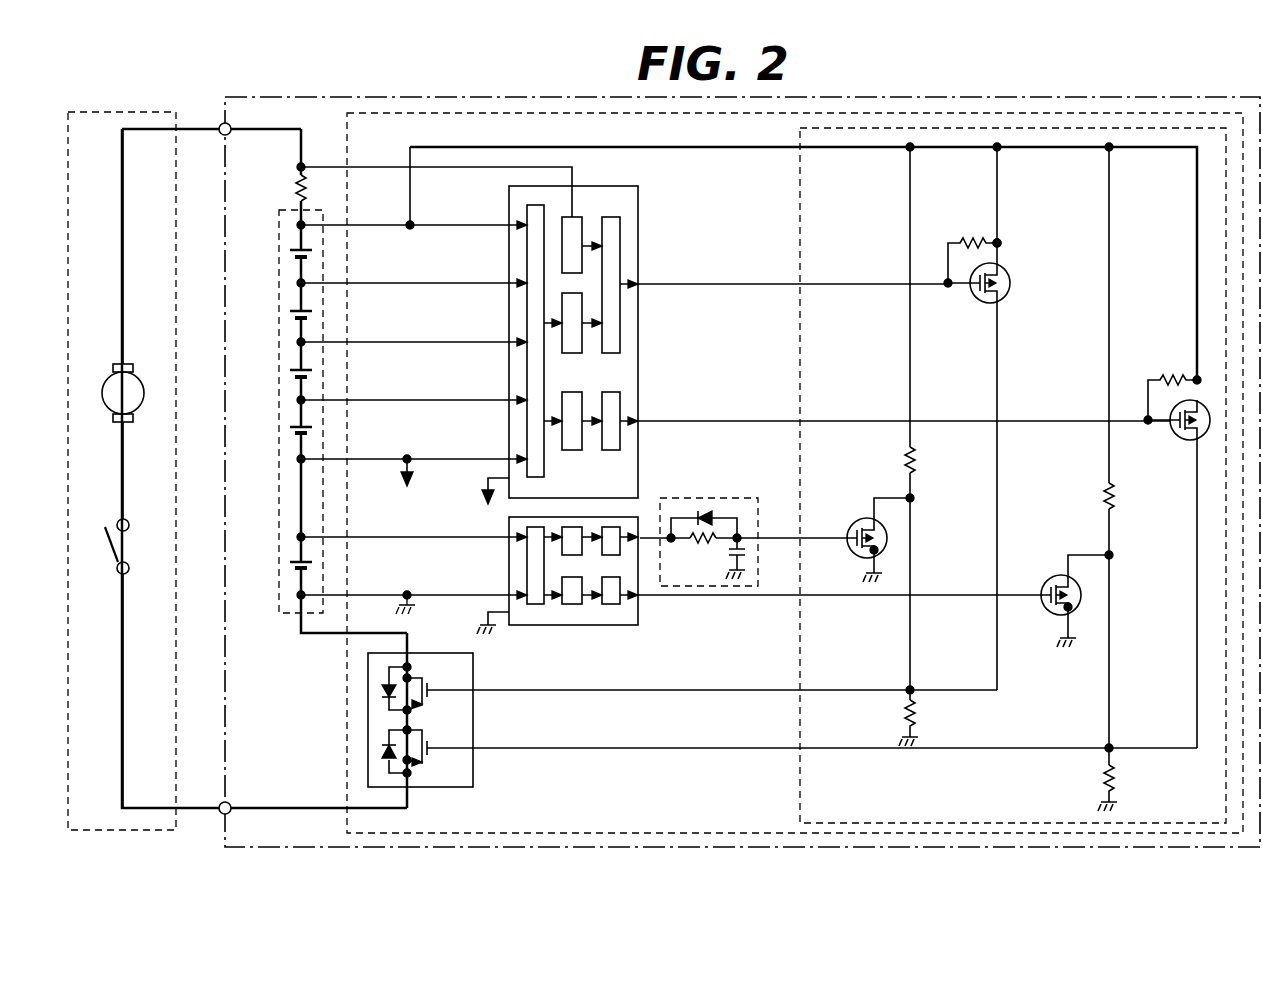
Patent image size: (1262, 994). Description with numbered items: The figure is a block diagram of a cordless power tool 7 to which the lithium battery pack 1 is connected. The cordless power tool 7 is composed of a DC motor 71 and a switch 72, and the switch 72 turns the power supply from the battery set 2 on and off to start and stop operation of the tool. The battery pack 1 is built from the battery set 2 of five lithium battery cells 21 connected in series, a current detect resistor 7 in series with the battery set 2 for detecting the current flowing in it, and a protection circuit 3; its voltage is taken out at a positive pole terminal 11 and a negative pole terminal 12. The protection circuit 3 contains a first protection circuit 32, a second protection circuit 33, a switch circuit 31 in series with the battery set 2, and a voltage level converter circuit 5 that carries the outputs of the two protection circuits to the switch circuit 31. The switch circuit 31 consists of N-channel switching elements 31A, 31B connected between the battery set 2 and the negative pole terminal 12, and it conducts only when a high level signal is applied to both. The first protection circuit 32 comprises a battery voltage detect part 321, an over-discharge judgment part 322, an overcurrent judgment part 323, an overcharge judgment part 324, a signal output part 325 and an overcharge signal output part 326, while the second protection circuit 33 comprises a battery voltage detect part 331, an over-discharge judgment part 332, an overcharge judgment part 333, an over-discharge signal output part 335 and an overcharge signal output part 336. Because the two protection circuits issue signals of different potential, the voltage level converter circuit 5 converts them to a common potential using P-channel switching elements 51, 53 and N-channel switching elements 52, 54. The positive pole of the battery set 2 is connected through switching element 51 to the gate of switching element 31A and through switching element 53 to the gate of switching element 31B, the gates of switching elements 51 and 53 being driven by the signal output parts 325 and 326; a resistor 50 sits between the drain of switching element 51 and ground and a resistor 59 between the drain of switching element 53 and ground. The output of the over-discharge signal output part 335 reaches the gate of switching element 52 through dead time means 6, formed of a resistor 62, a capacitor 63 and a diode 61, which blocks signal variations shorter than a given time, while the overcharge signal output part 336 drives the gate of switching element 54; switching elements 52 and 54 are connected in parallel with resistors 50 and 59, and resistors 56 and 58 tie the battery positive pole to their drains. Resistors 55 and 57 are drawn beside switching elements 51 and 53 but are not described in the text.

The lithium battery pack 1 is at (225, 246).
The battery set 2 is at (279, 233).
The protection circuit 3 is at (347, 129).
The voltage level converter circuit 5 is at (800, 231).
The dead time means 6 is at (746, 498).
The cordless power tool 7 is at (105, 112).
The positive pole terminal 11 is at (221, 122).
The negative pole terminal 12 is at (230, 804).
The lithium battery cell 21 is at (279, 572).
The switch circuit 31 is at (473, 768).
The switching element 31A is at (427, 681).
The switching element 31B is at (427, 756).
The first protection circuit 32 is at (638, 194).
The battery voltage detect part 321 is at (526, 214).
The over-discharge judgment part 322 is at (570, 353).
The overcurrent judgment part 323 is at (576, 212).
The overcharge judgment part 324 is at (572, 450).
The signal output part 325 is at (621, 232).
The overcharge signal output part 326 is at (620, 390).
The second protection circuit 33 is at (509, 570).
The battery voltage detect part 331 is at (534, 604).
The over-discharge judgment part 332 is at (588, 529).
The overcharge judgment part 333 is at (576, 604).
The over-discharge signal output part 335 is at (620, 556).
The overcharge signal output part 336 is at (614, 604).
The resistor 50 is at (903, 714).
The switching element 51 is at (986, 304).
The switching element 52 is at (856, 527).
The switching element 53 is at (1184, 439).
The switching element 54 is at (1051, 584).
The gate resistor 55 is at (970, 243).
The resistor 56 is at (905, 456).
The gate resistor 57 is at (1172, 382).
The resistor 58 is at (1104, 491).
The resistor 59 is at (1106, 774).
The diode 61 is at (705, 514).
The resistor 62 is at (702, 545).
The capacitor 63 is at (746, 553).
The DC motor 71 is at (103, 376).
The switch 72 is at (107, 538).